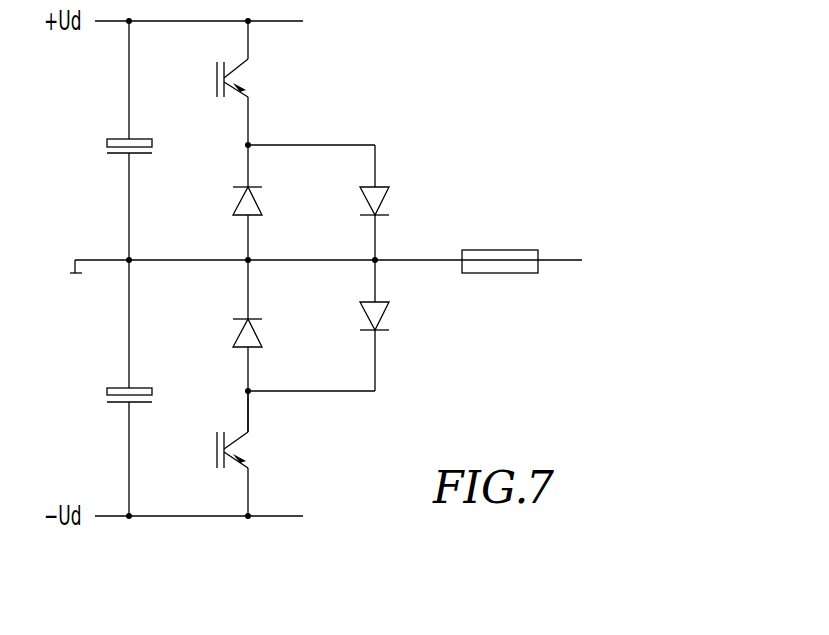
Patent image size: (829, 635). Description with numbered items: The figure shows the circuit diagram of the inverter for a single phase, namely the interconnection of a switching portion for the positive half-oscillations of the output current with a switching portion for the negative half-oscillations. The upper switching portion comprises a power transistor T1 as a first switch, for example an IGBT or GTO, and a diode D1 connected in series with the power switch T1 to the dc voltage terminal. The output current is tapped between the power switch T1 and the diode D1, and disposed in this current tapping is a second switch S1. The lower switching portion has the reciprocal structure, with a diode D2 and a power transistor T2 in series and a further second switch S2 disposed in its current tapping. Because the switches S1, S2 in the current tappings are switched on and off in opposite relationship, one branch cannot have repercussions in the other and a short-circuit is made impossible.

The power transistor T1 is at (249, 59).
The power transistor T2 is at (249, 429).
The diode D1 is at (230, 205).
The diode D2 is at (230, 337).
The second switch S1 is at (393, 206).
The second switch S2 is at (393, 320).